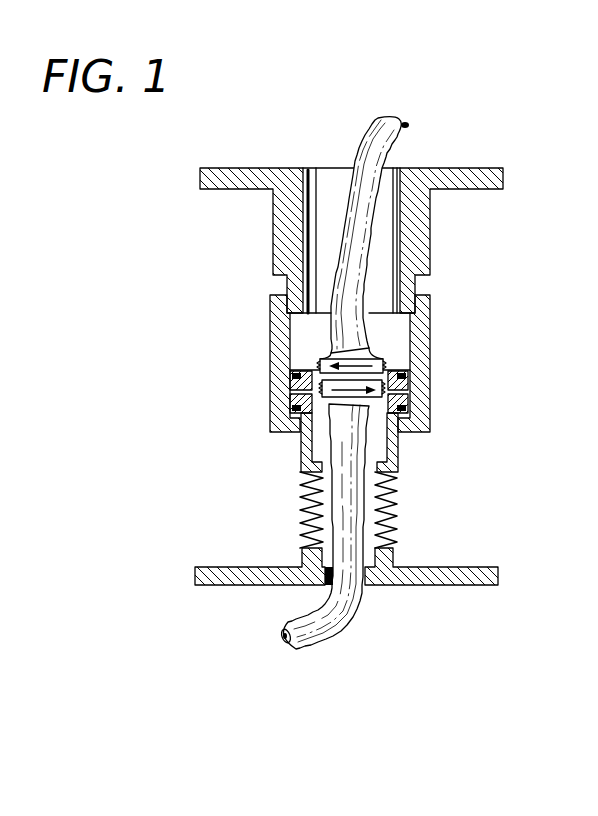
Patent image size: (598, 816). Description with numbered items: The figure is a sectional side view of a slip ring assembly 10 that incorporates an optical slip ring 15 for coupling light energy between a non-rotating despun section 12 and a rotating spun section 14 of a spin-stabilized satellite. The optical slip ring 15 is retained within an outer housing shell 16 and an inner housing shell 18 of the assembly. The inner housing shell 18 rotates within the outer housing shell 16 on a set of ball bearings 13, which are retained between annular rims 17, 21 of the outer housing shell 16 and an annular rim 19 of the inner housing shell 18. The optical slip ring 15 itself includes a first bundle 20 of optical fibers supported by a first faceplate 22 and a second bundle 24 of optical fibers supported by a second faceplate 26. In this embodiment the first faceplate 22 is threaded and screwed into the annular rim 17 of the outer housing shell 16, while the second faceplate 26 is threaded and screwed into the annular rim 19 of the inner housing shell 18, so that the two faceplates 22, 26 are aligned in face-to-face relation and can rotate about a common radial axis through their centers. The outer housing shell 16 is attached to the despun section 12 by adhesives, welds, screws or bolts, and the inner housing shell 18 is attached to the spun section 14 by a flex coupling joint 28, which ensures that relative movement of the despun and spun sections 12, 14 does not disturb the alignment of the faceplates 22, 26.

The slip ring assembly 10 is at (170, 274).
The non-rotating (despun) section 12 is at (506, 179).
The ball bearings 13 is at (280, 374).
The rotating (spun) section 14 is at (195, 574).
The optical slip ring 15 is at (380, 303).
The outer housing shell 16 is at (440, 330).
The annular rim 17 is at (374, 352).
The inner housing shell 18 is at (280, 391).
The annular rim 19 is at (427, 395).
The first bundle 20 is at (370, 160).
The annular rim 21 is at (283, 433).
The first faceplate 22 is at (341, 361).
The second bundle 24 is at (332, 618).
The second faceplate 26 is at (349, 398).
The flex coupling joint 28 is at (300, 499).